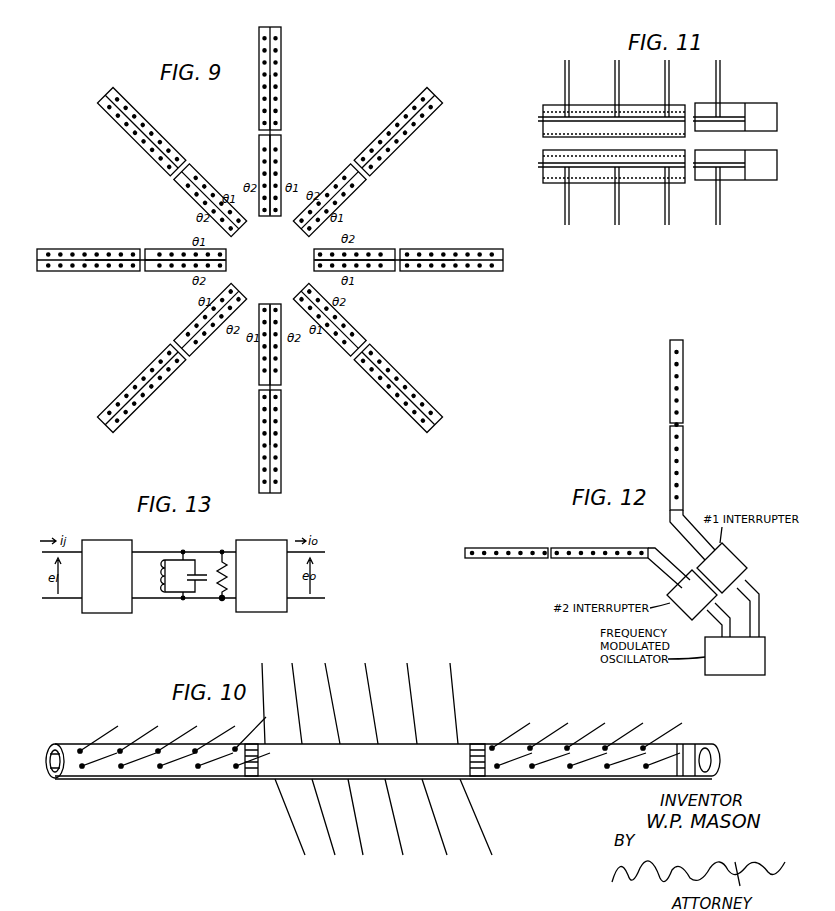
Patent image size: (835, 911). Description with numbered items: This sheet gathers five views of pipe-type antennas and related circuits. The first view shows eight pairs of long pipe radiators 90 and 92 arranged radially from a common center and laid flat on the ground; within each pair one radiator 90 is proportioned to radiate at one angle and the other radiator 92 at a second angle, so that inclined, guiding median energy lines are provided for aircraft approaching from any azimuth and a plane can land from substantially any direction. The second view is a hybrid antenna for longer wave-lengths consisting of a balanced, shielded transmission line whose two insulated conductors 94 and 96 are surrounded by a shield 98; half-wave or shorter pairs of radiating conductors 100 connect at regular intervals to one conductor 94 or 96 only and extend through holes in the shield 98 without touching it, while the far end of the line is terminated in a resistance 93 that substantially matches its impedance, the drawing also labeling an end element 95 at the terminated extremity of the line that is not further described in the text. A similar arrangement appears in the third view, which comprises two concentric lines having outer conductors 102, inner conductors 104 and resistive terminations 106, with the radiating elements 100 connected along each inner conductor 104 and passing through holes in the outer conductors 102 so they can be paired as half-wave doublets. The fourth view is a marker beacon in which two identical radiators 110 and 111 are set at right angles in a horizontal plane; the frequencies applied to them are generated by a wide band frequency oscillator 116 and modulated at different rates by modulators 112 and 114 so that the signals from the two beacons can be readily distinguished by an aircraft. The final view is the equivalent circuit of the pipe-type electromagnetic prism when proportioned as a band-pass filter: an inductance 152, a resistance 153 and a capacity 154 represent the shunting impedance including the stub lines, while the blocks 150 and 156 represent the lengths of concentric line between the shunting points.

In FIG. 9, the pipe radiator 90 is at (262, 446).
In FIG. 9, the pipe radiator 92 is at (283, 446).
In FIG. 10, the resistance 93 is at (690, 744).
In FIG. 10, the conductor 94 is at (52, 778).
In FIG. 10, the end cap 95 is at (716, 752).
In FIG. 10, the conductor 96 is at (60, 746).
In FIG. 10, the shield 98 is at (610, 779).
In FIG. 11, the radiating conductors 100 is at (569, 188).
In FIG. 10, the radiating conductors 100 is at (682, 744).
In FIG. 11, the outer conductors 102 is at (634, 176).
In FIG. 11, the inner conductors 104 is at (540, 163).
In FIG. 11, the resistive terminations 106 is at (752, 180).
In FIG. 12, the radiator 110 is at (683, 392).
In FIG. 12, the radiator 111 is at (482, 548).
In FIG. 12, the modulator 112 is at (668, 592).
In FIG. 12, the modulator 114 is at (740, 562).
In FIG. 12, the wide band frequency oscillator 116 is at (763, 644).
In FIG. 13, the length of concentric line 150 is at (102, 540).
In FIG. 13, the inductance 152 is at (170, 560).
In FIG. 13, the resistance 153 is at (220, 600).
In FIG. 13, the capacity 154 is at (210, 575).
In FIG. 13, the length of concentric line 156 is at (254, 612).